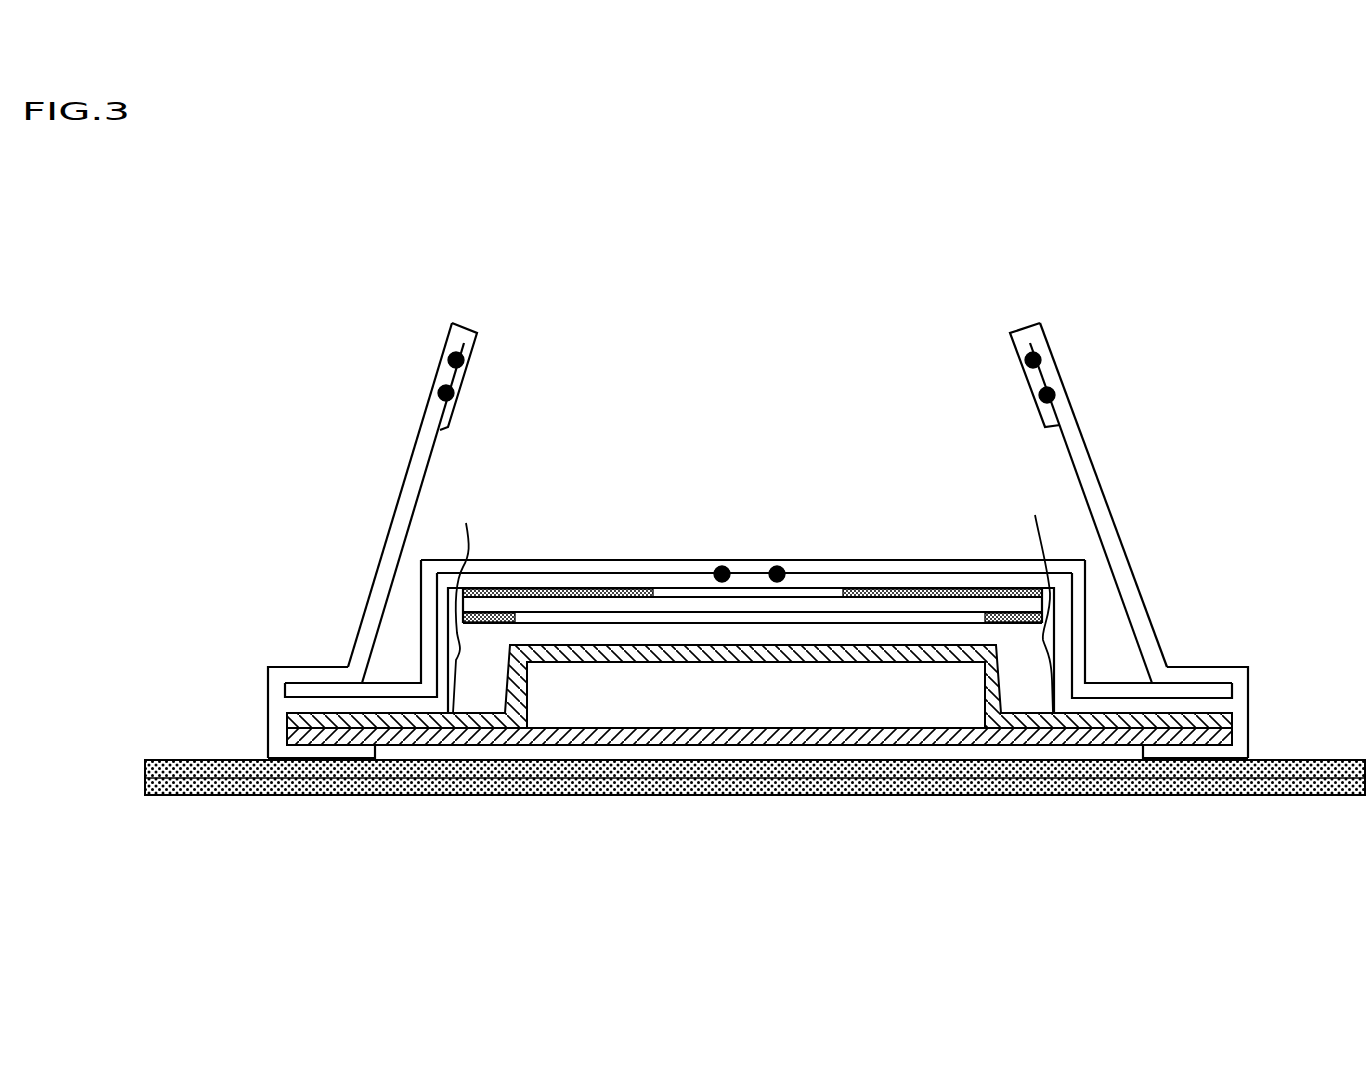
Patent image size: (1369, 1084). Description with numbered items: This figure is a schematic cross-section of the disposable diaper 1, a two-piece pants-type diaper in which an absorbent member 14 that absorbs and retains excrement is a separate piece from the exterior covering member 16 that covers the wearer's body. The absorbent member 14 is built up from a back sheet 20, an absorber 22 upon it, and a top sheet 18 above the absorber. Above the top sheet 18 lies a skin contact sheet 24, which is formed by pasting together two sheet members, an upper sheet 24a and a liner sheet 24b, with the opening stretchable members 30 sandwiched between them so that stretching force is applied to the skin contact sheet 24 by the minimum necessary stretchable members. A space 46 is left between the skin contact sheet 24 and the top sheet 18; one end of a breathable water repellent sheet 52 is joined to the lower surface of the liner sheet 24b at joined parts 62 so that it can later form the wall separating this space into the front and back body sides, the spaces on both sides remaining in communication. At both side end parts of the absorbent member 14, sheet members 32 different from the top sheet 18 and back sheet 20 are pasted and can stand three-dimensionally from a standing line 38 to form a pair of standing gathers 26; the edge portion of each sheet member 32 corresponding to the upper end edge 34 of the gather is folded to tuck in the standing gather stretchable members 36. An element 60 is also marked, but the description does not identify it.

The disposable diaper 1 is at (1227, 203).
The absorbent member 14 is at (695, 868).
The exterior covering member 16 is at (1118, 790).
The top sheet 18 is at (527, 690).
The back sheet 20 is at (665, 730).
The absorber 22 is at (590, 700).
The skin contact sheet 24 is at (512, 408).
The upper sheet 24a is at (523, 565).
The liner sheet 24b is at (593, 585).
The standing gathers 26 is at (409, 478).
The opening stretchable members 30 is at (722, 568).
The sheet members 32 is at (385, 550).
The upper end edge 34 is at (459, 320).
The standing gather stretchable members 36 is at (440, 391).
The standing line 38 is at (347, 667).
The space 46 is at (752, 598).
The breathable water repellent sheet 52 is at (895, 633).
The lower electrode layer 60 is at (1040, 618).
The joined parts 62 is at (960, 590).